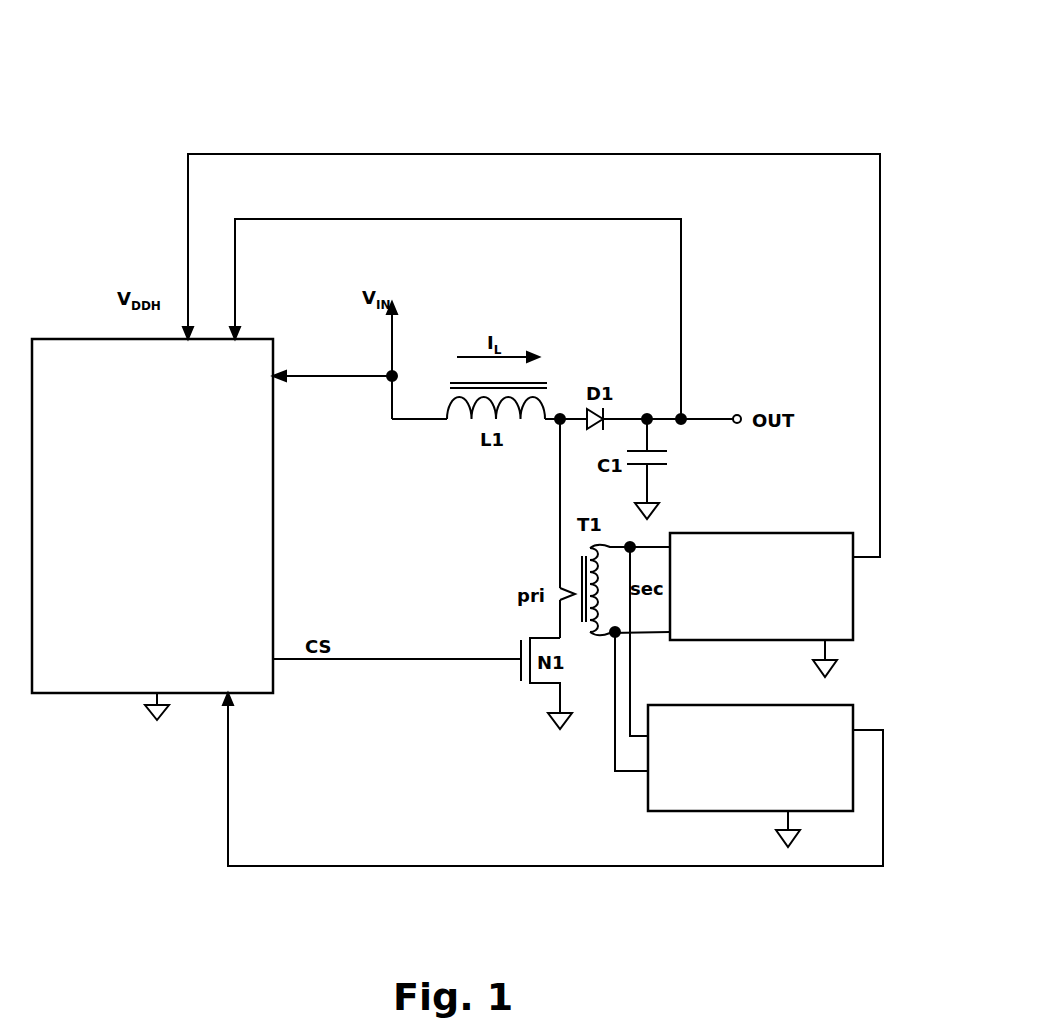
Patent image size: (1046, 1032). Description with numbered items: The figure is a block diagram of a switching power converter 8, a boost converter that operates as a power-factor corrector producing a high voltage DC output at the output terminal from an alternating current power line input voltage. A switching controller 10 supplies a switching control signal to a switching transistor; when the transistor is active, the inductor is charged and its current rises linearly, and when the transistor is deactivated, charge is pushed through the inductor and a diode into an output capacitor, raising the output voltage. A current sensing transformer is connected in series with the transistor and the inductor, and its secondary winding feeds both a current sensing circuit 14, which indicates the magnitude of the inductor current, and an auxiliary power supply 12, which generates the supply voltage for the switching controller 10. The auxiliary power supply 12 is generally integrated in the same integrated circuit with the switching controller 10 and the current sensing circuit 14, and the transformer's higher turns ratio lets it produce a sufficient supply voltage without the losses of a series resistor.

The switching power converter 8 is at (799, 104).
The switching controller 10 is at (152, 529).
The auxiliary power supply 12 is at (761, 605).
The current sensing circuit 14 is at (750, 776).